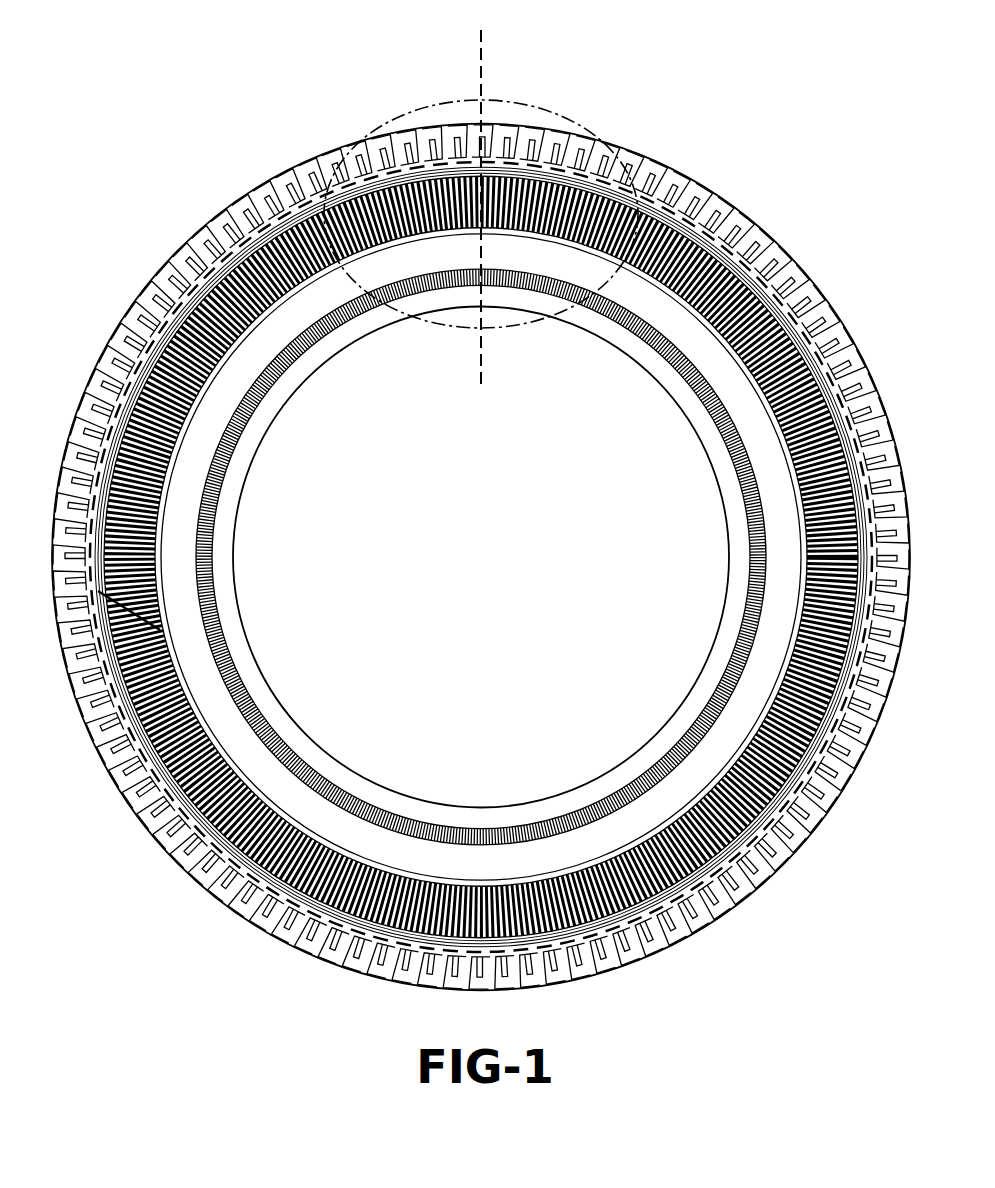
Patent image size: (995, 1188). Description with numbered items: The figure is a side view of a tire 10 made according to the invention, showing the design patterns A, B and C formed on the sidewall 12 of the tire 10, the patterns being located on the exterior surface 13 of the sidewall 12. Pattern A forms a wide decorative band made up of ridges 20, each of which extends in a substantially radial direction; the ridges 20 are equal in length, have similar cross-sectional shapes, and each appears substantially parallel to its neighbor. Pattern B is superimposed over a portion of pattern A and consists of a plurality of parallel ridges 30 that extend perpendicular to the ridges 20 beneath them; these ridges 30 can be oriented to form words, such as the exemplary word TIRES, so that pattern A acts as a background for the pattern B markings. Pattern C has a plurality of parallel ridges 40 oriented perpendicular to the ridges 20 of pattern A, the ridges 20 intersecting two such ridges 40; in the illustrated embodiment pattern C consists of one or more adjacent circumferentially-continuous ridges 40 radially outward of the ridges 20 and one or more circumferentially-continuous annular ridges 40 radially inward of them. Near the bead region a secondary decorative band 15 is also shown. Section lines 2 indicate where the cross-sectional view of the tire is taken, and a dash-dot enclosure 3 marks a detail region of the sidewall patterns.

The tire 10 is at (207, 897).
The sidewall 12 is at (788, 583).
The exterior surface 13 is at (328, 822).
The secondary decorative band 15 is at (582, 807).
The ridges 20 is at (137, 512).
The ridges 30 is at (393, 187).
The ridges 40 is at (150, 593).
The section lines 2- 2 is at (473, 25).
The detail region of FIG. 3 is at (372, 97).
The pattern A is at (243, 277).
The pattern B is at (540, 177).
The pattern C is at (722, 252).